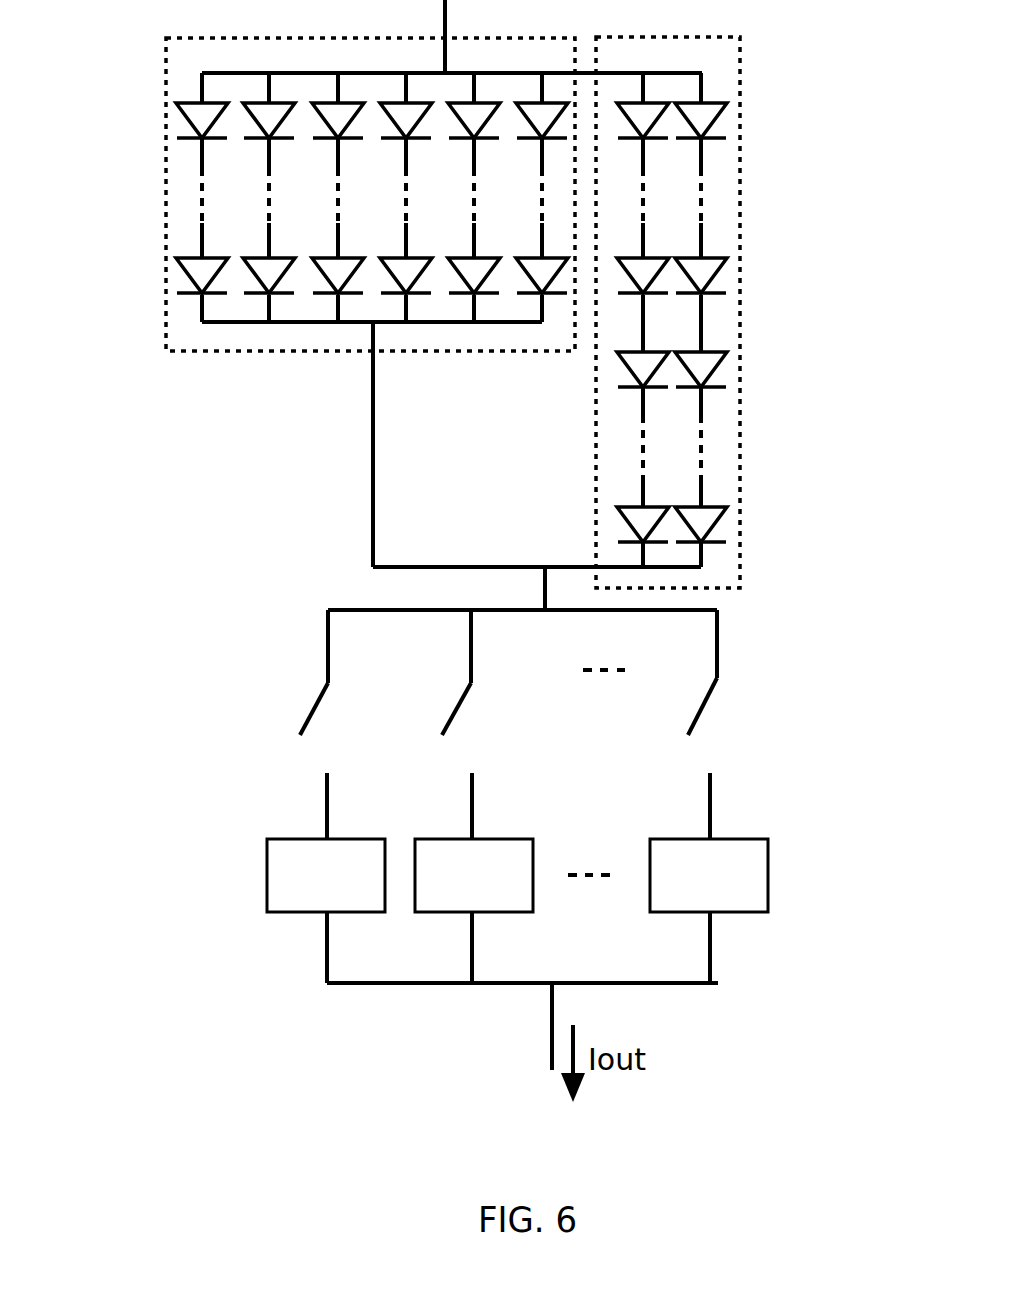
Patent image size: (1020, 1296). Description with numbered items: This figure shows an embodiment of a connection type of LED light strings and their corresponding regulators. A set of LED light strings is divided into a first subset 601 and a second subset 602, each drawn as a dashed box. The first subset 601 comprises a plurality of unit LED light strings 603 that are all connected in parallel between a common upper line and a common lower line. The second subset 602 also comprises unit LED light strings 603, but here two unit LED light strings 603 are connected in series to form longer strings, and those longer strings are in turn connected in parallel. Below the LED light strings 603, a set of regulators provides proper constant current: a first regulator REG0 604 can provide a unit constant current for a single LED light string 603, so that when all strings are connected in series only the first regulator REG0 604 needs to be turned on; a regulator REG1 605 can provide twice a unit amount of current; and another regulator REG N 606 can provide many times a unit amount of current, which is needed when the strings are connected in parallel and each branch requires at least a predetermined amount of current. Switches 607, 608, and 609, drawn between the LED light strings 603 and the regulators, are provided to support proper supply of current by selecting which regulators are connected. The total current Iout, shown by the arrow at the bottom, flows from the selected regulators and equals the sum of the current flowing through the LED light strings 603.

The first subset 601 is at (158, 202).
The second subset 602 is at (740, 212).
The unit LED light string 603 is at (268, 220).
The first regulator REG0 604 is at (277, 862).
The regulator REG1 605 is at (460, 900).
The regulator REG N 606 is at (720, 895).
The switch 607 is at (290, 710).
The switch 608 is at (450, 707).
The switch 609 is at (712, 697).